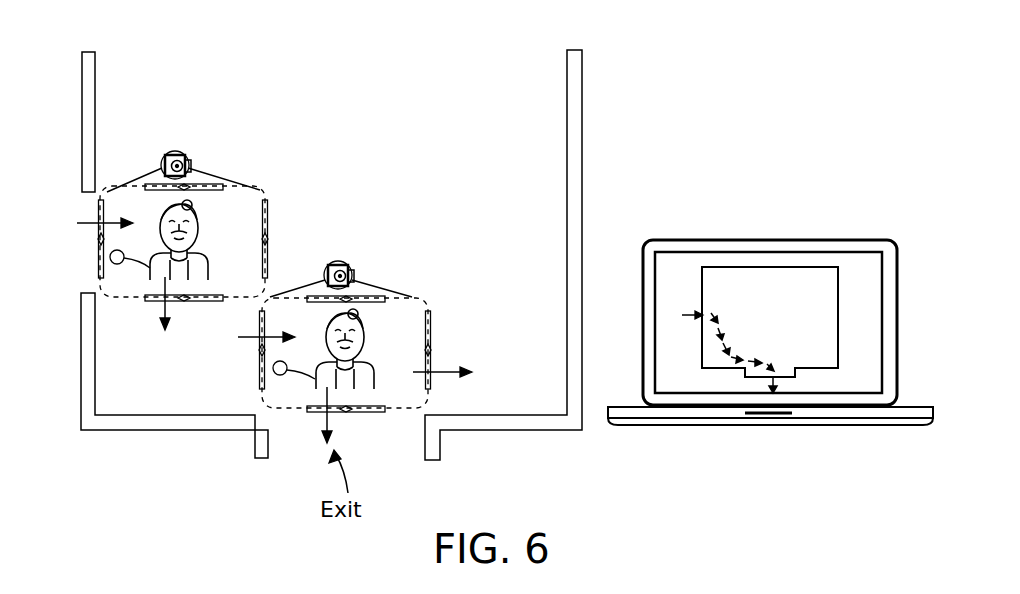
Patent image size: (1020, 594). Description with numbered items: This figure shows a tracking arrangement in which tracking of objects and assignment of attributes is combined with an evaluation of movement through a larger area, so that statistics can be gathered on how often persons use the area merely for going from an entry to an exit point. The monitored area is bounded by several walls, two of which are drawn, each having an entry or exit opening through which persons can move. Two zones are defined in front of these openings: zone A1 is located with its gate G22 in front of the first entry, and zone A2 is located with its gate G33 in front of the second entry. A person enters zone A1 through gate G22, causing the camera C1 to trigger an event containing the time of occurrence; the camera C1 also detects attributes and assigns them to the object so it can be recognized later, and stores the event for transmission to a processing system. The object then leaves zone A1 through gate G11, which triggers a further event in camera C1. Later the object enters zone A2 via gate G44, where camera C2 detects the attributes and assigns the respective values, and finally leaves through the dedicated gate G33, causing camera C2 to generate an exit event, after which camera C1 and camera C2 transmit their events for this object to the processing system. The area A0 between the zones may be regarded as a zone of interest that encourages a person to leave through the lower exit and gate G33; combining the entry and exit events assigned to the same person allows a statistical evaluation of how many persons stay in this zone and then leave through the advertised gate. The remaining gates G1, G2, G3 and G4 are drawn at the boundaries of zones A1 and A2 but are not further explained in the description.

The area A0 is at (137, 399).
The zone A1 is at (172, 257).
The zone A2 is at (355, 369).
The camera C1 is at (183, 152).
The camera C2 is at (345, 262).
The gate G1 is at (143, 176).
The gate G2 is at (268, 218).
The gate G3 is at (313, 284).
The gate G4 is at (432, 338).
The gate G11 is at (193, 301).
The gate G22 is at (97, 262).
The gate G33 is at (378, 412).
The gate G44 is at (259, 380).